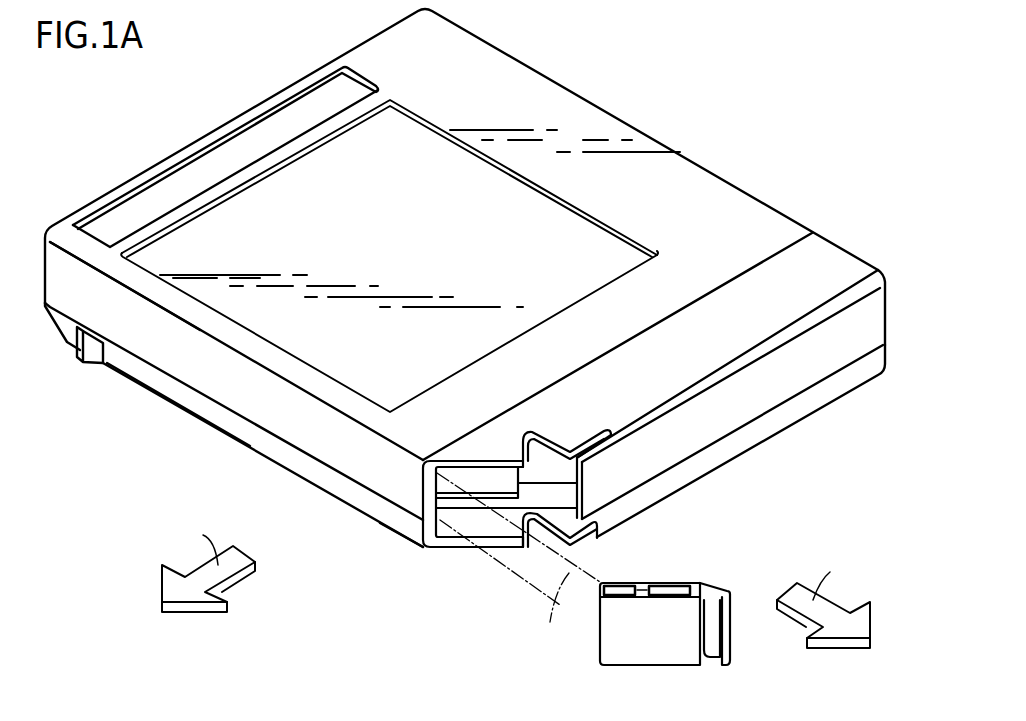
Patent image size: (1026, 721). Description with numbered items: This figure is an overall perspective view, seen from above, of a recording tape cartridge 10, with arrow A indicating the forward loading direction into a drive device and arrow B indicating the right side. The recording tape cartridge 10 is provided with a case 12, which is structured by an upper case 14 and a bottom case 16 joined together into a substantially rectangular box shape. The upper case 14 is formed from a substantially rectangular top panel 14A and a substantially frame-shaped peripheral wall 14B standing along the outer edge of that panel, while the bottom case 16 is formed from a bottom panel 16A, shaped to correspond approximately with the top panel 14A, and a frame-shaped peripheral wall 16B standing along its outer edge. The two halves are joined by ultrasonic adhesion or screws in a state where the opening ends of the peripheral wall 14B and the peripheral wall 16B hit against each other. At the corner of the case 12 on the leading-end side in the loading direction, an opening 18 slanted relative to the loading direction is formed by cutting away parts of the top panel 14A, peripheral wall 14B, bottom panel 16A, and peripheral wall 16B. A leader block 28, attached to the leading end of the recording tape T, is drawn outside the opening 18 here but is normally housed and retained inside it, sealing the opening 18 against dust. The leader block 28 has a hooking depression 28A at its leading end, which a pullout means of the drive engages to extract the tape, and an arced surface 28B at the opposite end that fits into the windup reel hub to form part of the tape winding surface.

The recording tape cartridge 10 is at (684, 108).
The case 12 is at (832, 436).
The upper case 14 is at (728, 412).
The top panel 14A is at (757, 222).
The peripheral wall 14B is at (300, 425).
The bottom case 16 is at (727, 453).
The bottom panel 16A is at (448, 540).
The peripheral wall 16B is at (333, 482).
The opening 18 is at (497, 478).
The leader block 28 is at (650, 673).
The hooking depression 28A is at (711, 648).
The arced surface 28B is at (591, 591).